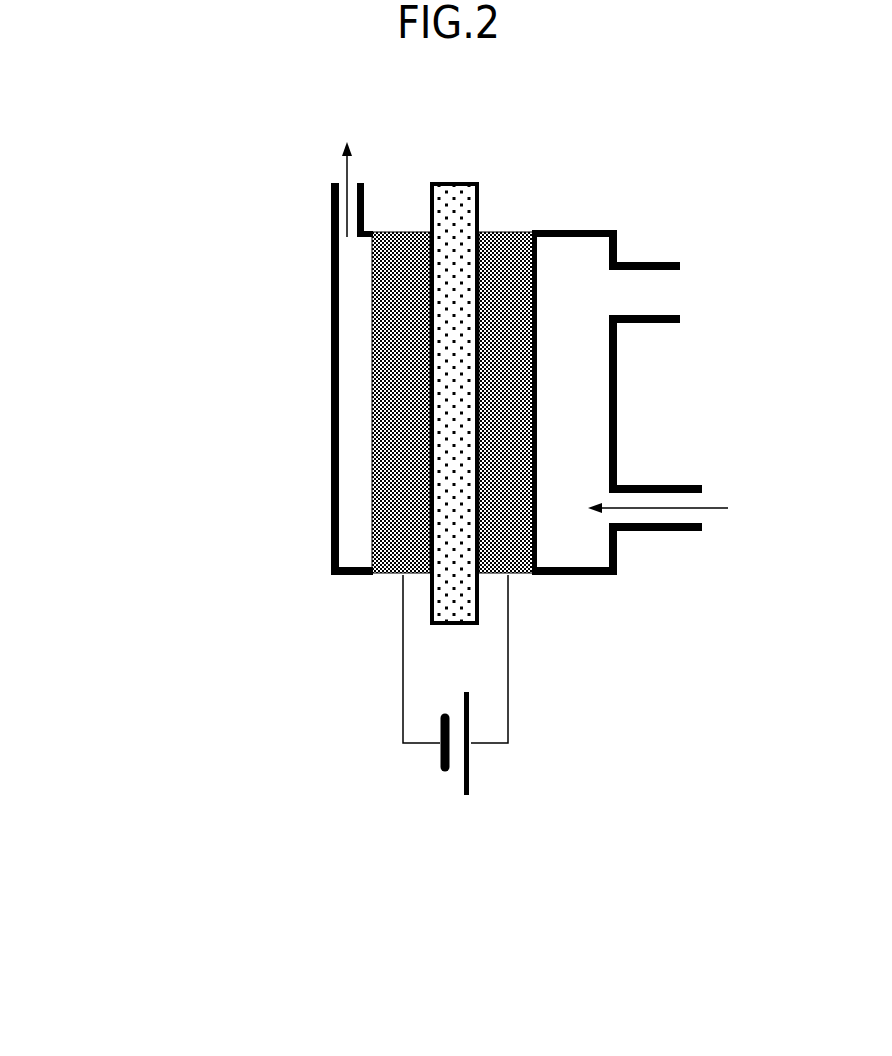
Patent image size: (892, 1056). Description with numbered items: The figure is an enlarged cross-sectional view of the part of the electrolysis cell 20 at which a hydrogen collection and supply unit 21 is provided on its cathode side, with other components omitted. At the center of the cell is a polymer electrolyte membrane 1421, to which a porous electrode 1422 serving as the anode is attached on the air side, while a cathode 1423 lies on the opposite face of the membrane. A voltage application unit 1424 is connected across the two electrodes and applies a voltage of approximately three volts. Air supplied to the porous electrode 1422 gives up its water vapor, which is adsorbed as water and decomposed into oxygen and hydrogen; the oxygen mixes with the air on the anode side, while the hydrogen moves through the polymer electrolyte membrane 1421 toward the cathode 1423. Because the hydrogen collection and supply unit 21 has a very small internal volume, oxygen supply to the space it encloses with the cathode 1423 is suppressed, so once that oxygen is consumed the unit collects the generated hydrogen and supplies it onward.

The electrolysis cell 20 is at (77, 138).
The hydrogen collection and supply unit 21 is at (331, 398).
The polymer electrolyte membrane 1421 is at (452, 186).
The porous electrode 1422 is at (510, 235).
The cathode 1423 is at (397, 235).
The voltage application unit 1424 is at (448, 801).